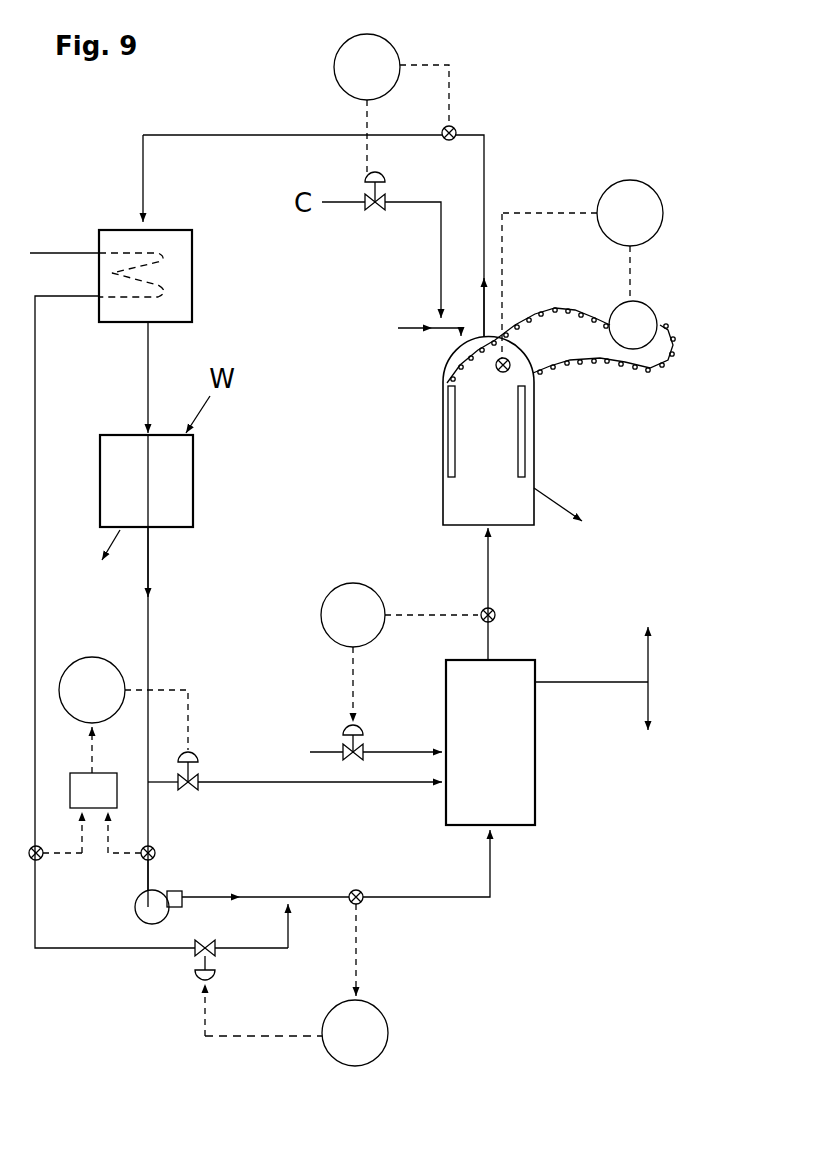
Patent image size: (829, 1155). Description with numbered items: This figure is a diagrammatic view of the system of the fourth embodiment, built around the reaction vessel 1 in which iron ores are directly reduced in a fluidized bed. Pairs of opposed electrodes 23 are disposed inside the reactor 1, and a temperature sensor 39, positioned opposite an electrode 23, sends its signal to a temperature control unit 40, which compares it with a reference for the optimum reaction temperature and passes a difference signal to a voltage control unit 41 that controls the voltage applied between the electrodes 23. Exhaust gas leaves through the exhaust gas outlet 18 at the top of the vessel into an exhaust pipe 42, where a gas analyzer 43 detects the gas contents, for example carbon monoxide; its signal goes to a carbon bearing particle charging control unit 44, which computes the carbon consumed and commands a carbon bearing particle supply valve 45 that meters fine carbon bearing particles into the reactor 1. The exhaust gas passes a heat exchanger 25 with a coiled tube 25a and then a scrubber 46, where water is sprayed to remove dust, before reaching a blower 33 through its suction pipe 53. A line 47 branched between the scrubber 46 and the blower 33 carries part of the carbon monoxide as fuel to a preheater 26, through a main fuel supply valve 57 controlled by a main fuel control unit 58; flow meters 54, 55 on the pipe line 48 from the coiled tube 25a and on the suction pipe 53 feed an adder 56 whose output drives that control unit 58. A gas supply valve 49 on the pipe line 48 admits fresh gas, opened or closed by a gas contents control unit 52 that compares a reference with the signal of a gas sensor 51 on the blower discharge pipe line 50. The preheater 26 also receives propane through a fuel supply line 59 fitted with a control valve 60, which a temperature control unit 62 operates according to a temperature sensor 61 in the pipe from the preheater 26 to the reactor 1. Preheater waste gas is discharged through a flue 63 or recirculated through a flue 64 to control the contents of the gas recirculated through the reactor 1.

The reaction vessel 1 is at (478, 467).
The exhaust gas outlet 18 is at (487, 337).
The electrodes 23 is at (452, 440).
The heat exchanger 25 is at (193, 272).
The coiled tube 25a is at (130, 253).
The preheater 26 is at (515, 785).
The blower 33 is at (165, 903).
The temperature sensor 39 is at (507, 360).
The temperature control unit 40 is at (635, 190).
The voltage control unit 41 is at (645, 315).
The exhaust pipe 42 is at (275, 133).
The gas analyzer 43 is at (456, 128).
The carbon bearing particle charging control unit 44 is at (370, 52).
The carbon bearing particle supply valve 45 is at (382, 180).
The scrubber 46 is at (194, 470).
The line 47 is at (285, 780).
The pipe line 48 is at (35, 390).
The gas supply valve 49 is at (213, 975).
The discharge pipe line 50 is at (265, 897).
The gas sensor 51 is at (358, 890).
The gas contents control unit 52 is at (372, 1020).
The suction pipe 53 is at (150, 822).
The flow meter 54 is at (42, 860).
The flow meter 55 is at (143, 858).
The adder 56 is at (100, 790).
The main fuel supply valve 57 is at (198, 758).
The main fuel control unit 58 is at (90, 670).
The fuel supply line 59 is at (415, 752).
The control valve 60 is at (347, 738).
The temperature sensor 61 is at (495, 610).
The temperature control unit 62 is at (350, 590).
The flue 63 is at (601, 637).
The flue 64 is at (649, 720).